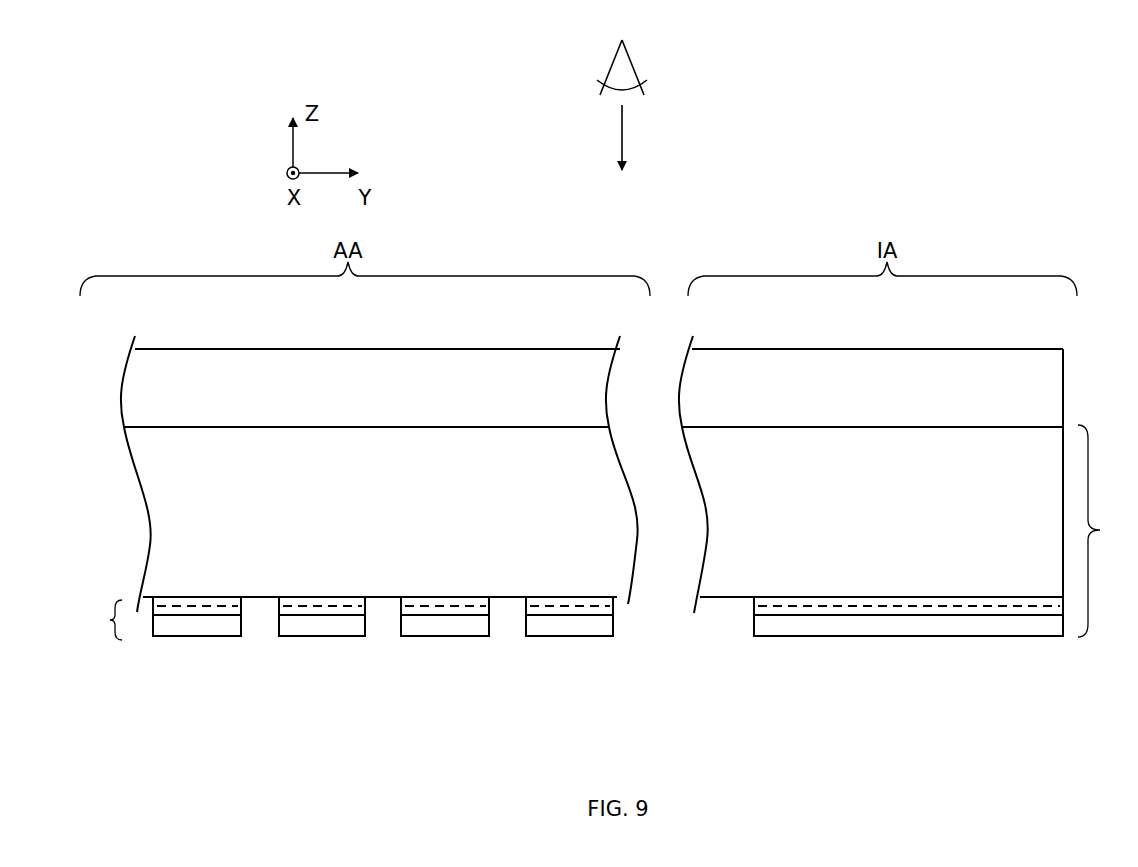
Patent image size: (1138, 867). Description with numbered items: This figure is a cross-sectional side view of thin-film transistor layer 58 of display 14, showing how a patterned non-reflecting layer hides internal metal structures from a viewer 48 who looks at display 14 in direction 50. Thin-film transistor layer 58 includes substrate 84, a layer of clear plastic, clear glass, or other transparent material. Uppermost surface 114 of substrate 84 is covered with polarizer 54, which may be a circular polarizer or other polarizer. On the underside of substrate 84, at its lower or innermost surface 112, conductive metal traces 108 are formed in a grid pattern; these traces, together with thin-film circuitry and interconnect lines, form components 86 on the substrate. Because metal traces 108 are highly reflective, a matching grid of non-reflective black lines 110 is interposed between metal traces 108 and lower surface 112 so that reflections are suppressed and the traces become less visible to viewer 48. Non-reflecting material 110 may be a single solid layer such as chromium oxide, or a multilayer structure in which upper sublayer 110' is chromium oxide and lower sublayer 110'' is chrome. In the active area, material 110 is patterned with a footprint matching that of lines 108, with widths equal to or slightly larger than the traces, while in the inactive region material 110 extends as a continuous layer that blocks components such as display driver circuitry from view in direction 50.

The display 14 is at (818, 149).
The viewer 48 is at (630, 65).
The viewing direction 50 is at (622, 140).
The polarizer 54 is at (492, 357).
The thin-film transistor layer 58 is at (1104, 531).
The substrate 84 is at (150, 512).
The components 86 is at (101, 620).
The conductive metal traces 108 is at (241, 636).
The non-reflecting lines 110 is at (608, 614).
The upper sublayer 110' is at (608, 581).
The lower sublayer 110'' is at (608, 651).
The lower surface 112 is at (260, 597).
The uppermost surface 114 is at (212, 430).